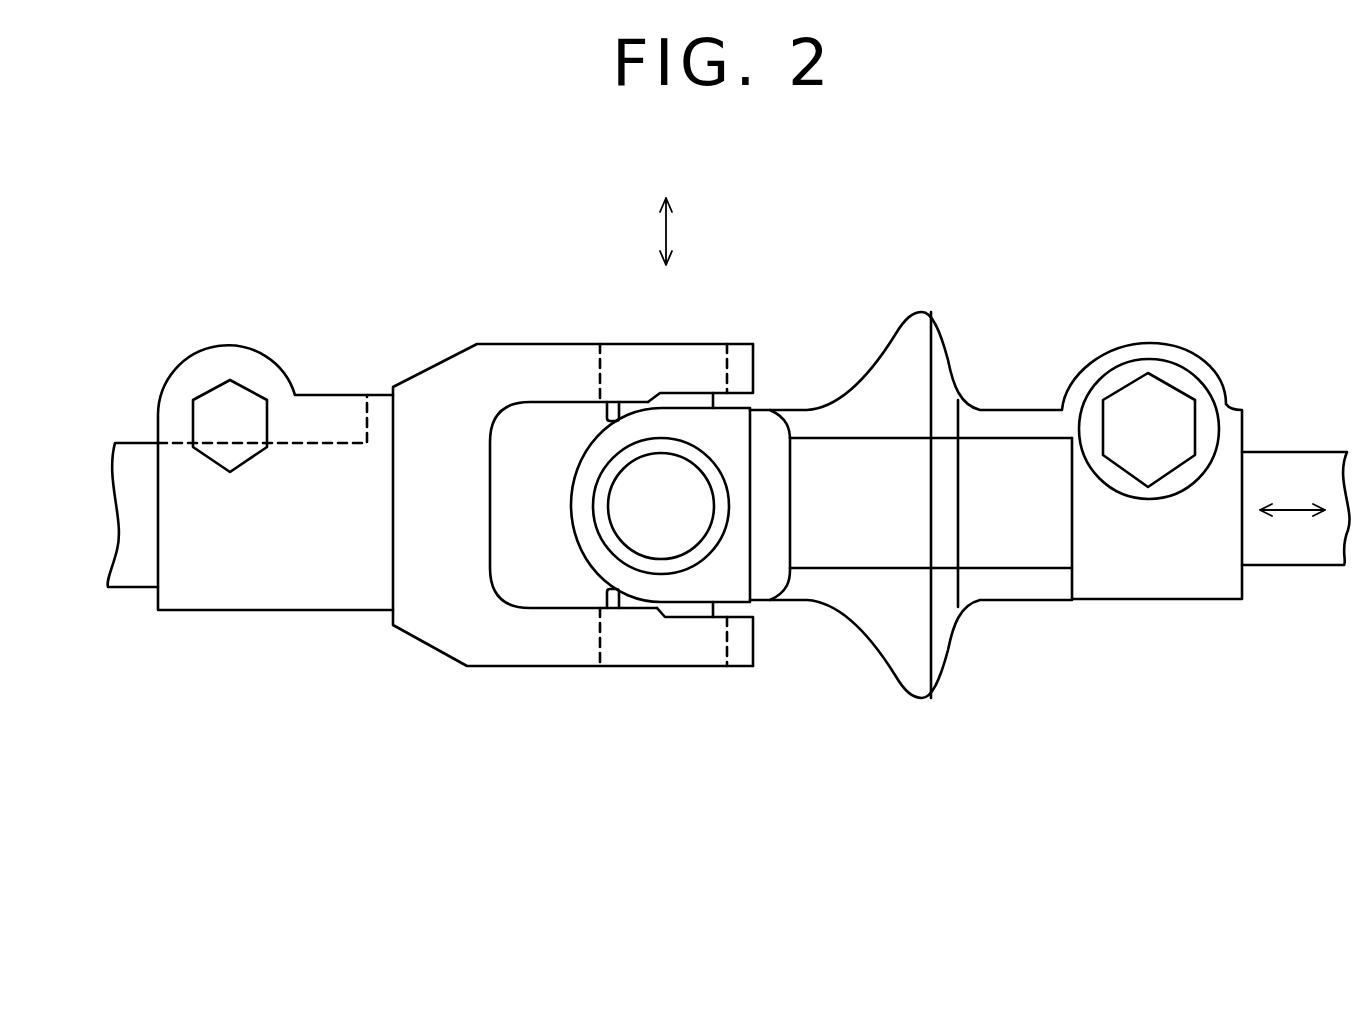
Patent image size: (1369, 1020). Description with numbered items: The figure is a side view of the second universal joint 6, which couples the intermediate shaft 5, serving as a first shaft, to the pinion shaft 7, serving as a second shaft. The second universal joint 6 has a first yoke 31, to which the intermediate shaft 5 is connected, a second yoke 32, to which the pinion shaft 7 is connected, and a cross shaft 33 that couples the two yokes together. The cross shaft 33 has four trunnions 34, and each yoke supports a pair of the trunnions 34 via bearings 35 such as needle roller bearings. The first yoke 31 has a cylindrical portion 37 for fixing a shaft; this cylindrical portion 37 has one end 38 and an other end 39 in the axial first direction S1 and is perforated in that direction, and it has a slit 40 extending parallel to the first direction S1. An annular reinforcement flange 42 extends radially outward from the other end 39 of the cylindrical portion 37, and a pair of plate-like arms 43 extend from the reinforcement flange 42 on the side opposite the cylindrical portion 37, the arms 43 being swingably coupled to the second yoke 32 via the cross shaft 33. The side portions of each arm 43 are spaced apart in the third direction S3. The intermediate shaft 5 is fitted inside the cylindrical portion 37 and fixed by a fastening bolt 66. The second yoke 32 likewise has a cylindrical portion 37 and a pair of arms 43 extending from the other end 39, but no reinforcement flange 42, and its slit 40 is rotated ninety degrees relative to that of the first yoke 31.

The intermediate shaft 5 is at (1290, 565).
The second universal joint 6 is at (483, 685).
The pinion shaft 7 is at (127, 587).
The first yoke 31 is at (950, 306).
The second yoke 32 is at (502, 344).
The cross shaft 33 is at (670, 488).
The trunnion 34 is at (607, 400).
The bearing 35 is at (737, 350).
The cylindrical portion 37 is at (261, 598).
The one end 38 is at (158, 548).
The other end 39 is at (390, 533).
The slit 40 is at (312, 443).
The reinforcement flange 42 is at (911, 700).
The arm 43 is at (550, 352).
The fastening bolt 66 is at (250, 387).
The first direction S1 is at (1290, 510).
The third direction S3 is at (666, 232).